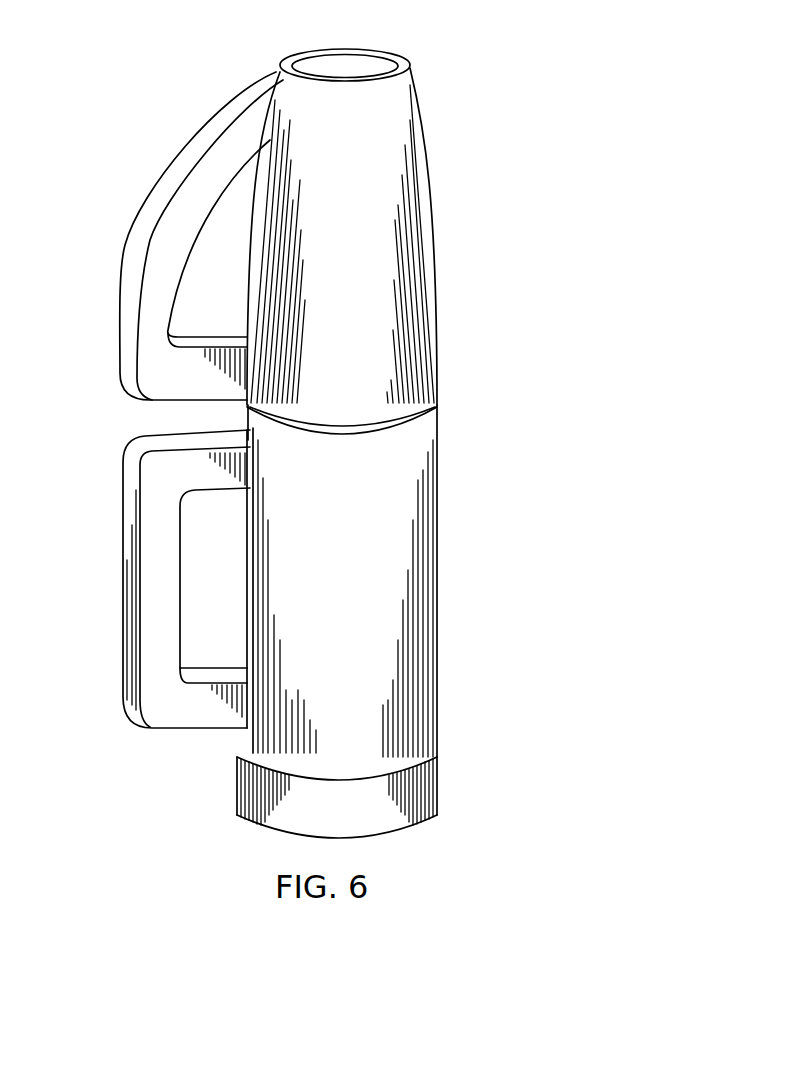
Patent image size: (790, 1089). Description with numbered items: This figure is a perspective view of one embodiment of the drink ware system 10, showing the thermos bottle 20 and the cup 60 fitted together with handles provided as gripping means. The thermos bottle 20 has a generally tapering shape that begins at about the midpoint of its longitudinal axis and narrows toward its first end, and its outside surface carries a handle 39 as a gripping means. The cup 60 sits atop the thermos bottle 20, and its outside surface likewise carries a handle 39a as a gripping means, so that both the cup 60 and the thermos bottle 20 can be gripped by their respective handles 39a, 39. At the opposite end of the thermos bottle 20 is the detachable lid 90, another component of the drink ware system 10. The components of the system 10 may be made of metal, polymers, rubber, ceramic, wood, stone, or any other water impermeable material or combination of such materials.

The drink ware system 10 is at (573, 76).
The cup 60 is at (467, 269).
The handle 39a is at (155, 204).
The thermos bottle 20 is at (540, 461).
The handle 39 is at (122, 548).
The detachable lid 90 is at (438, 778).